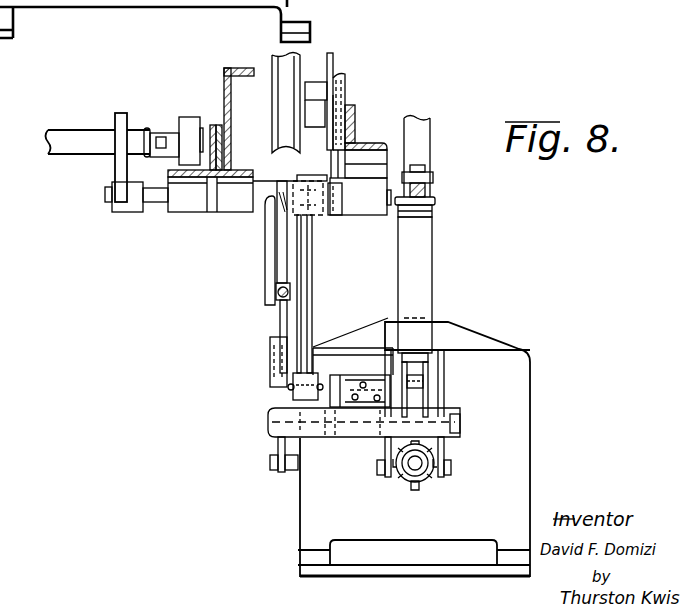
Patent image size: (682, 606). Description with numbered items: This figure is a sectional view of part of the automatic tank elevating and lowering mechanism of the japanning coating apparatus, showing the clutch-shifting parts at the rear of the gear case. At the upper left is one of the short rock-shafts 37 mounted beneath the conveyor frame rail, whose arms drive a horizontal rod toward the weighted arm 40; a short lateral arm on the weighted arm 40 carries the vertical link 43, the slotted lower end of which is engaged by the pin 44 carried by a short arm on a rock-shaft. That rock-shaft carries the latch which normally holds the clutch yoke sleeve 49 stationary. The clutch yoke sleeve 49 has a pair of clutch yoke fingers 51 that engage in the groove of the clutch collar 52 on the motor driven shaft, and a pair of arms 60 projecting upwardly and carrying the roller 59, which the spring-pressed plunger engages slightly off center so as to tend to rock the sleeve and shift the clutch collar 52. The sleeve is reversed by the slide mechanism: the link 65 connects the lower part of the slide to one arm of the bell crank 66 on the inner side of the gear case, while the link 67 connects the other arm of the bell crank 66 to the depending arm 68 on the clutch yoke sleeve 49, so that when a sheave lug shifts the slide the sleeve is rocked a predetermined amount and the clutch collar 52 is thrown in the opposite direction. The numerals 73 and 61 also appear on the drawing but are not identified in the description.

The shaft 73 is at (120, 156).
The vertical rod 61 is at (115, 116).
The rock-shaft 37 is at (105, 205).
The weighted arm 40 is at (278, 322).
The vertical link 43 is at (311, 264).
The link 65 is at (297, 304).
The pin 44 is at (333, 358).
The bell crank 66 is at (275, 397).
The depending arm 68 is at (272, 446).
The link 67 is at (292, 471).
The clutch yoke sleeve 49 is at (353, 436).
The arms 60 is at (432, 370).
The roller 59 is at (428, 395).
The clutch yoke fingers 51 is at (446, 453).
The clutch collar 52 is at (430, 480).